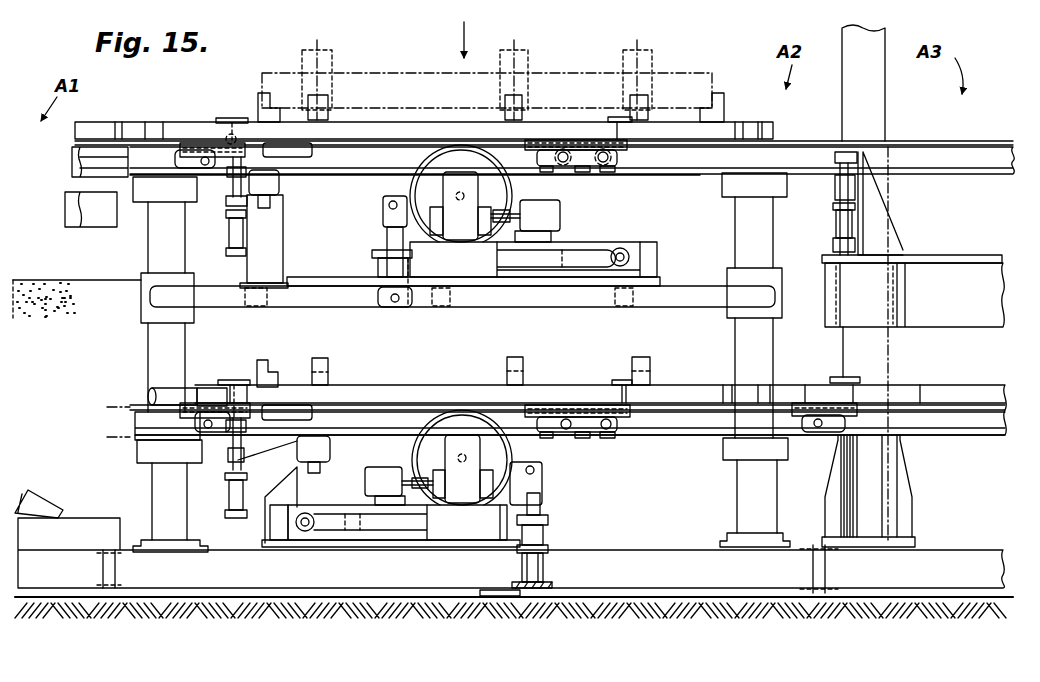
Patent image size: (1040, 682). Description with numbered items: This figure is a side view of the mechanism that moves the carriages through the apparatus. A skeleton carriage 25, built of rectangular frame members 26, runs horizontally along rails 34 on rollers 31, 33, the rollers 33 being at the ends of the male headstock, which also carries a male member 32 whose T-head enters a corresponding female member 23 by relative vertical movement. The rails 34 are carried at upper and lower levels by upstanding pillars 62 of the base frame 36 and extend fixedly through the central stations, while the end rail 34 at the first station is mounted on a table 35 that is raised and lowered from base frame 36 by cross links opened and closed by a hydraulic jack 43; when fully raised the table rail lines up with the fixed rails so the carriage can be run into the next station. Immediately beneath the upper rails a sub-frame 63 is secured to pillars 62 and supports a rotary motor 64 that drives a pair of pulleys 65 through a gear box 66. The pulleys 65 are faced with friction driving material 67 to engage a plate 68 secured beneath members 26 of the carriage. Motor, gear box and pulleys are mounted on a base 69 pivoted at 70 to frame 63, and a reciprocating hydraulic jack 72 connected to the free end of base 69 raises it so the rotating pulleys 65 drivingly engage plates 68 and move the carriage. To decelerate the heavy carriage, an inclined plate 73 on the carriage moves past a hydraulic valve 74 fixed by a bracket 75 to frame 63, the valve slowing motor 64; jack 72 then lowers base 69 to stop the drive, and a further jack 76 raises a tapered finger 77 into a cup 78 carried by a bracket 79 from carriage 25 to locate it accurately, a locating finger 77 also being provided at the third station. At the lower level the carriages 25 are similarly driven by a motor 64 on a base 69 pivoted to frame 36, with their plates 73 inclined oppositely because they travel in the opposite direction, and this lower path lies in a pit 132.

The female member 23 is at (772, 117).
The skeleton carriage 25 is at (100, 130).
The rectangular frame member 26 is at (590, 132).
The rollers 31 is at (543, 155).
The male member 32 is at (150, 396).
The rollers 33 is at (175, 143).
The rail 34 is at (74, 160).
The table 35 is at (65, 207).
The base frame 36 is at (65, 566).
The hydraulic motor or jack 43 is at (34, 501).
The pillar 62 is at (150, 344).
The sub-frame 63 is at (683, 297).
The rotary motor 64 is at (556, 214).
The pulley 65 is at (452, 160).
The gear box 66 is at (410, 210).
The friction driving material 67 is at (412, 178).
The plate 68 is at (390, 141).
The base 69 is at (590, 248).
The pivot 70 is at (623, 249).
The reciprocating hydraulic motor or jack 72 is at (380, 268).
The inclined plate 73 is at (284, 145).
The hydraulic valve 74 is at (280, 187).
The bracket 75 is at (283, 227).
The reciprocating motor or jack 76 is at (228, 232).
The tapered finger 77 is at (243, 140).
The cup 78 is at (232, 125).
The bracket 79 is at (225, 118).
The pit 132 is at (40, 300).